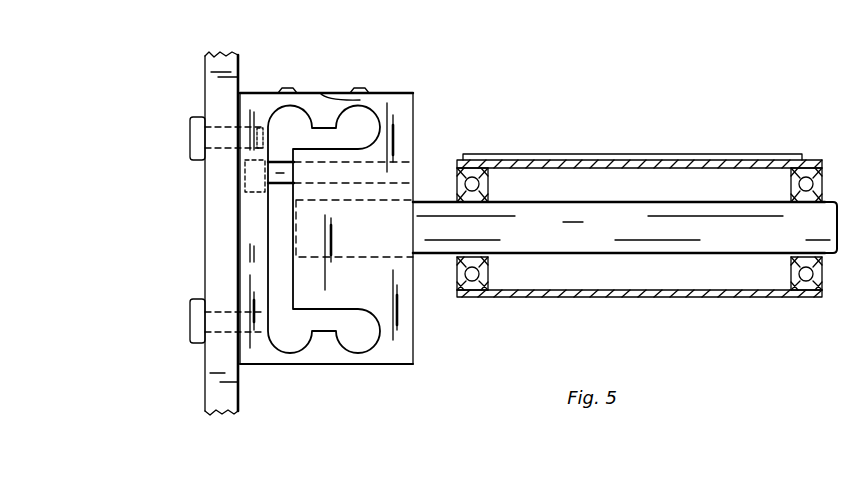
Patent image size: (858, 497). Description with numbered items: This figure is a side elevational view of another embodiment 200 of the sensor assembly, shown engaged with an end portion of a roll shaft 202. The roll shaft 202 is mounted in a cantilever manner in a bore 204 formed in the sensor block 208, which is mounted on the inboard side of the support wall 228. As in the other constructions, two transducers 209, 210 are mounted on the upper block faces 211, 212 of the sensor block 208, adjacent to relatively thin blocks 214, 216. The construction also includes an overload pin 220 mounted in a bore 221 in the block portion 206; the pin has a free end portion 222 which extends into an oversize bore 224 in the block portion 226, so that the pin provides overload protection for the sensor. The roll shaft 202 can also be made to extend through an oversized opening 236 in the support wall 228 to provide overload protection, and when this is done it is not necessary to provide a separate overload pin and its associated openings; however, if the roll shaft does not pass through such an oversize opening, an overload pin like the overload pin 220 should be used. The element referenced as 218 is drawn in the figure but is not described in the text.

The sensor assembly embodiment 200 is at (530, 92).
The roll shaft 202 is at (645, 218).
The bore 204 is at (395, 212).
The block portion 206 is at (407, 290).
The sensor block 208 is at (422, 100).
The transducer 209 is at (287, 88).
The transducer 210 is at (358, 88).
The upper block face 211 is at (401, 92).
The upper block face 212 is at (327, 366).
The thin block 214 is at (237, 99).
The thin block 216 is at (320, 93).
The C-shaped slot 218 is at (280, 218).
The overload pin 220 is at (347, 177).
The bore 221 is at (417, 175).
The free end portion 222 is at (240, 176).
The oversize bore 224 is at (238, 178).
The block portion 226 is at (250, 282).
The support wall 228 is at (226, 393).
The oversized opening 236 is at (255, 258).